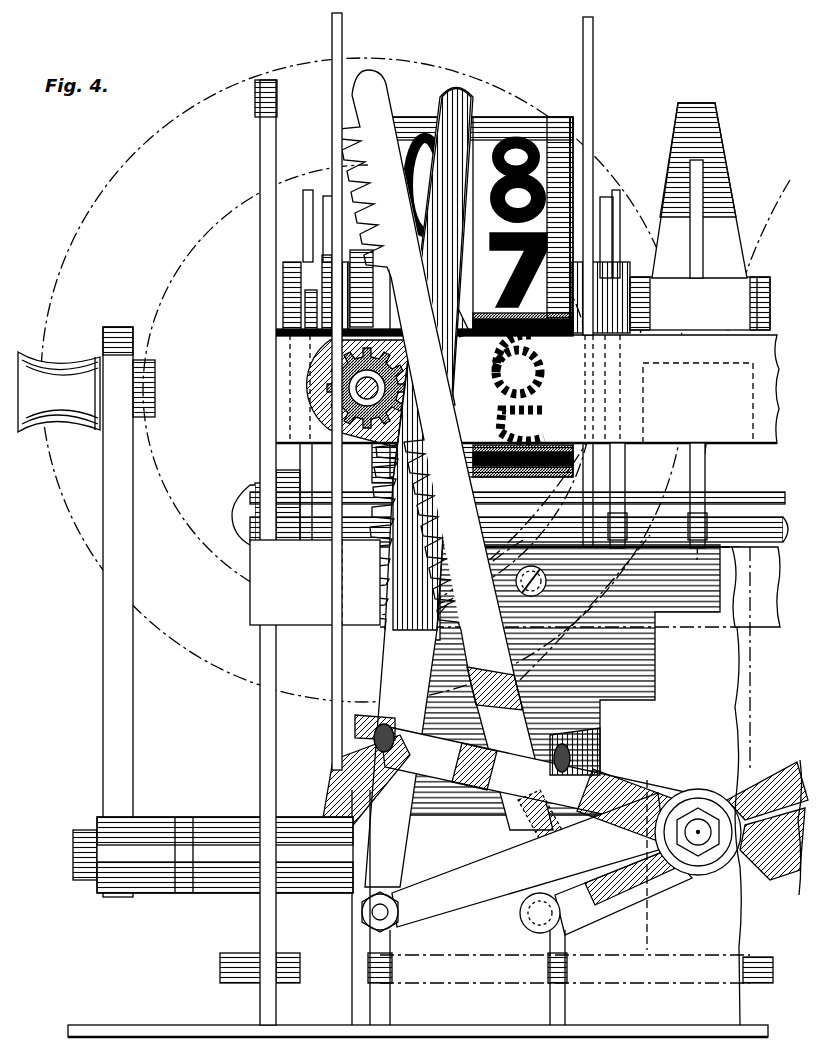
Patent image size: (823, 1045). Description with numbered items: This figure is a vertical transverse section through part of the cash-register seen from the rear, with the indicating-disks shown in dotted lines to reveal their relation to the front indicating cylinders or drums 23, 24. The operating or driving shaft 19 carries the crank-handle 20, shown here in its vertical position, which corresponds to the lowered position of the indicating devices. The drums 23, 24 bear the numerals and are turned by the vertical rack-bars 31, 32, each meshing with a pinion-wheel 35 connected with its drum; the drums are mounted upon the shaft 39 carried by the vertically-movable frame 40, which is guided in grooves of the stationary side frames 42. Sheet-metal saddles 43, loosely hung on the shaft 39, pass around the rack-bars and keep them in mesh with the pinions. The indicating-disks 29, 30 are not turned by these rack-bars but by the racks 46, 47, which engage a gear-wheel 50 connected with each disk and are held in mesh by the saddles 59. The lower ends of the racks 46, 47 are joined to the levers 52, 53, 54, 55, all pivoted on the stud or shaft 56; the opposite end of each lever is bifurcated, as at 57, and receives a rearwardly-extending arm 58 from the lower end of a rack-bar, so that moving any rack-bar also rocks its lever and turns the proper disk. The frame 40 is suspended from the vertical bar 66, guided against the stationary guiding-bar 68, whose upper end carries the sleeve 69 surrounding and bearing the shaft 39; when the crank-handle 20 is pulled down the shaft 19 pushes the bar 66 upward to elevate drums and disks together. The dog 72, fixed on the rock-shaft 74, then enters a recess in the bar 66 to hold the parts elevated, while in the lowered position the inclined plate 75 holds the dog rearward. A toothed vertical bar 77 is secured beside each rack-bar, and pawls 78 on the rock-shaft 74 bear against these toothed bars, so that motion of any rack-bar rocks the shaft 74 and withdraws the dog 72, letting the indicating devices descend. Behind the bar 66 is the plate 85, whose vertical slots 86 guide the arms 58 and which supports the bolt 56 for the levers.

The operating or driving shaft 19 is at (235, 823).
The operating crank-handle 20 is at (103, 650).
The indicating cylinder or drum 23 is at (550, 118).
The indicating cylinder or drum 24 is at (400, 113).
The indicating rotary disk 29 is at (78, 236).
The indicating rotary disk 30 is at (163, 280).
The vertical rack-bar 31 is at (342, 28).
The vertical rack-bar 32 is at (593, 60).
The pinion-wheel 35 is at (358, 256).
The shaft 39 is at (770, 298).
The vertically-movable frame 40 is at (277, 312).
The stationary main supporting side frame 42 is at (260, 737).
The saddle 43 is at (328, 198).
The rack 46 is at (445, 450).
The rack 47 is at (418, 488).
The gear-wheel 50 is at (330, 386).
The lever 52 is at (615, 772).
The lever 53 is at (535, 779).
The lever 54 is at (578, 908).
The lever 55 is at (513, 862).
The stud or shaft 56 is at (700, 828).
The bifurcated end 57 is at (372, 712).
The rearwardly-extending arm 58 is at (390, 722).
The saddle 59 is at (470, 300).
The vertical bar 66 is at (648, 912).
The stationary guiding-bar 68 is at (746, 675).
The sleeve 69 is at (757, 278).
The dog 72 is at (696, 257).
The rock-shaft 74 is at (760, 497).
The inclined plate 75 is at (701, 190).
The toothed vertical bar 77 is at (303, 207).
The pawl 78 is at (306, 462).
The plate 85 is at (560, 680).
The vertical slot 86 is at (388, 1003).